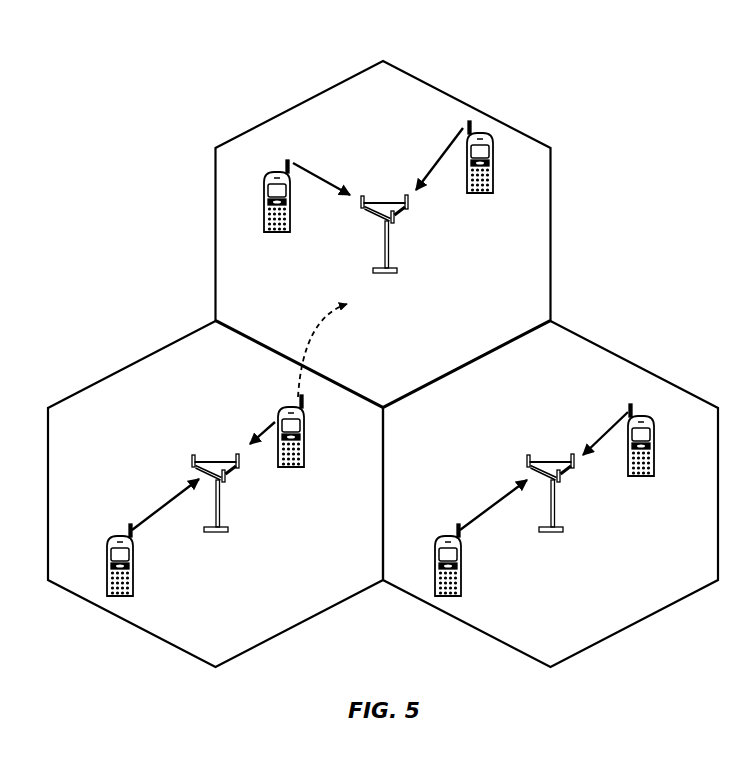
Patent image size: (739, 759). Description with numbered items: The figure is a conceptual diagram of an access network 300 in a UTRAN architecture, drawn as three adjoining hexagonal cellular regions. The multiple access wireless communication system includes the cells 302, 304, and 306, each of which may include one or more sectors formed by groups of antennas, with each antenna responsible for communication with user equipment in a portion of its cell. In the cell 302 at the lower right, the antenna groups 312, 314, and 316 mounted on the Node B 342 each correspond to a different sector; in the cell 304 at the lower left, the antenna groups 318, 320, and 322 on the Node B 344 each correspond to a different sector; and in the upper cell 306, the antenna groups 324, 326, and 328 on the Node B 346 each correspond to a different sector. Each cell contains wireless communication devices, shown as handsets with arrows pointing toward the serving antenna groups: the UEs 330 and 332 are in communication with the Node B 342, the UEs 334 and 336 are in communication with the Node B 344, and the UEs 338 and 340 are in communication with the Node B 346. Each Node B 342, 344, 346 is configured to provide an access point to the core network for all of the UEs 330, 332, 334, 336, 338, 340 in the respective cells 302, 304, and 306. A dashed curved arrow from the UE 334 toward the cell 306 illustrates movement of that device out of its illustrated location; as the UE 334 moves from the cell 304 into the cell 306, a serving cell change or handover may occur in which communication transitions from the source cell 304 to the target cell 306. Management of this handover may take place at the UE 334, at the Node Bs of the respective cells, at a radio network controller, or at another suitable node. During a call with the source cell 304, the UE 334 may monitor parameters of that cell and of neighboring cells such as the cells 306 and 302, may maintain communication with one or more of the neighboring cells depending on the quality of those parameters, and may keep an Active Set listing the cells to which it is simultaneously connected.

The access network 300 is at (645, 81).
The cell 302 is at (632, 364).
The cell 304 is at (113, 373).
The cell 306 is at (453, 97).
The antenna group 312 is at (527, 466).
The antenna group 314 is at (561, 484).
The antenna group 316 is at (575, 468).
The antenna group 318 is at (225, 484).
The antenna group 320 is at (240, 468).
The antenna group 322 is at (192, 465).
The antenna group 324 is at (361, 210).
The antenna group 326 is at (393, 225).
The antenna group 328 is at (406, 209).
The UE 330 is at (655, 437).
The UE 332 is at (435, 558).
The UE 334 is at (304, 424).
The UE 336 is at (107, 558).
The UE 338 is at (277, 233).
The UE 340 is at (481, 195).
The Node B 342 is at (550, 477).
The Node B 344 is at (215, 476).
The Node B 346 is at (382, 218).